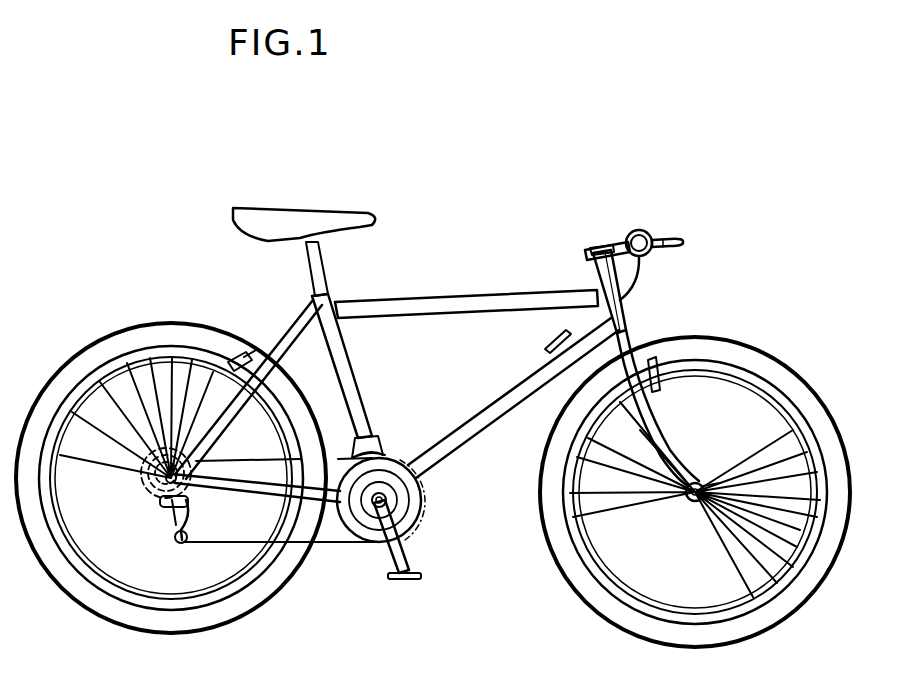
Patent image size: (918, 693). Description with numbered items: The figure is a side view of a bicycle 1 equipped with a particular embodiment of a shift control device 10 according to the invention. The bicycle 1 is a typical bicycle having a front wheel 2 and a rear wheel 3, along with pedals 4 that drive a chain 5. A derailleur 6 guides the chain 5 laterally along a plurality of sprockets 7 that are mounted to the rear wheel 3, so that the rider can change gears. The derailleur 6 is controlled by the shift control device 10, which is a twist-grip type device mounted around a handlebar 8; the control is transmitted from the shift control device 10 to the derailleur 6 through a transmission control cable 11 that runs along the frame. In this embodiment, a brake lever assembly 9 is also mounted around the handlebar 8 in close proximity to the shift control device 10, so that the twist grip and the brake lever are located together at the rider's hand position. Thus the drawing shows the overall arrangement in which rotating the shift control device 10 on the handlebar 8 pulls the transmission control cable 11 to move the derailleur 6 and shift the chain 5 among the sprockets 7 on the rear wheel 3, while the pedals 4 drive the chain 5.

The bicycle 1 is at (467, 186).
The front wheel 2 is at (808, 402).
The rear wheel 3 is at (167, 320).
The pedals 4 is at (413, 583).
The chain 5 is at (232, 540).
The derailleur 6 is at (183, 537).
The sprockets 7 is at (138, 487).
The handlebar 8 is at (645, 258).
The brake lever assembly 9 is at (688, 229).
The shift control device 10 is at (632, 224).
The transmission control cable 11 is at (563, 333).